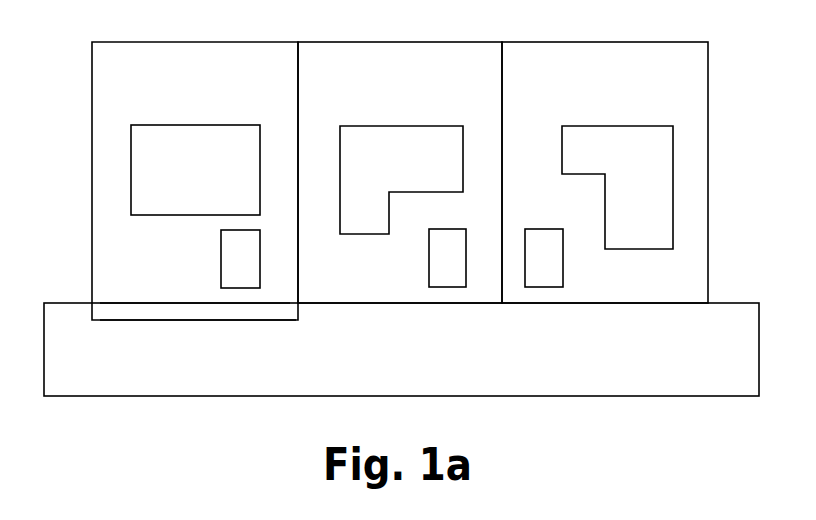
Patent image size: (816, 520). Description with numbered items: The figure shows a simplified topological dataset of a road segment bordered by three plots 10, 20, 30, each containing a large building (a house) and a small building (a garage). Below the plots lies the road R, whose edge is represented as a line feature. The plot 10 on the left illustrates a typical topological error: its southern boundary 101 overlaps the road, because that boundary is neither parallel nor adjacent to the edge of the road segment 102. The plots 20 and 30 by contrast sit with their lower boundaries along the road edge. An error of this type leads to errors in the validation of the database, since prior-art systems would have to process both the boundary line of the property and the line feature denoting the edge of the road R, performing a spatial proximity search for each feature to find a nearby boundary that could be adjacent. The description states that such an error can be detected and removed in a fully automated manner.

The plot 10 is at (195, 181).
The plot 20 is at (400, 172).
The plot 30 is at (605, 172).
The southern boundary 101 is at (236, 334).
The edge of the road segment 102 is at (163, 286).
The road R is at (401, 349).